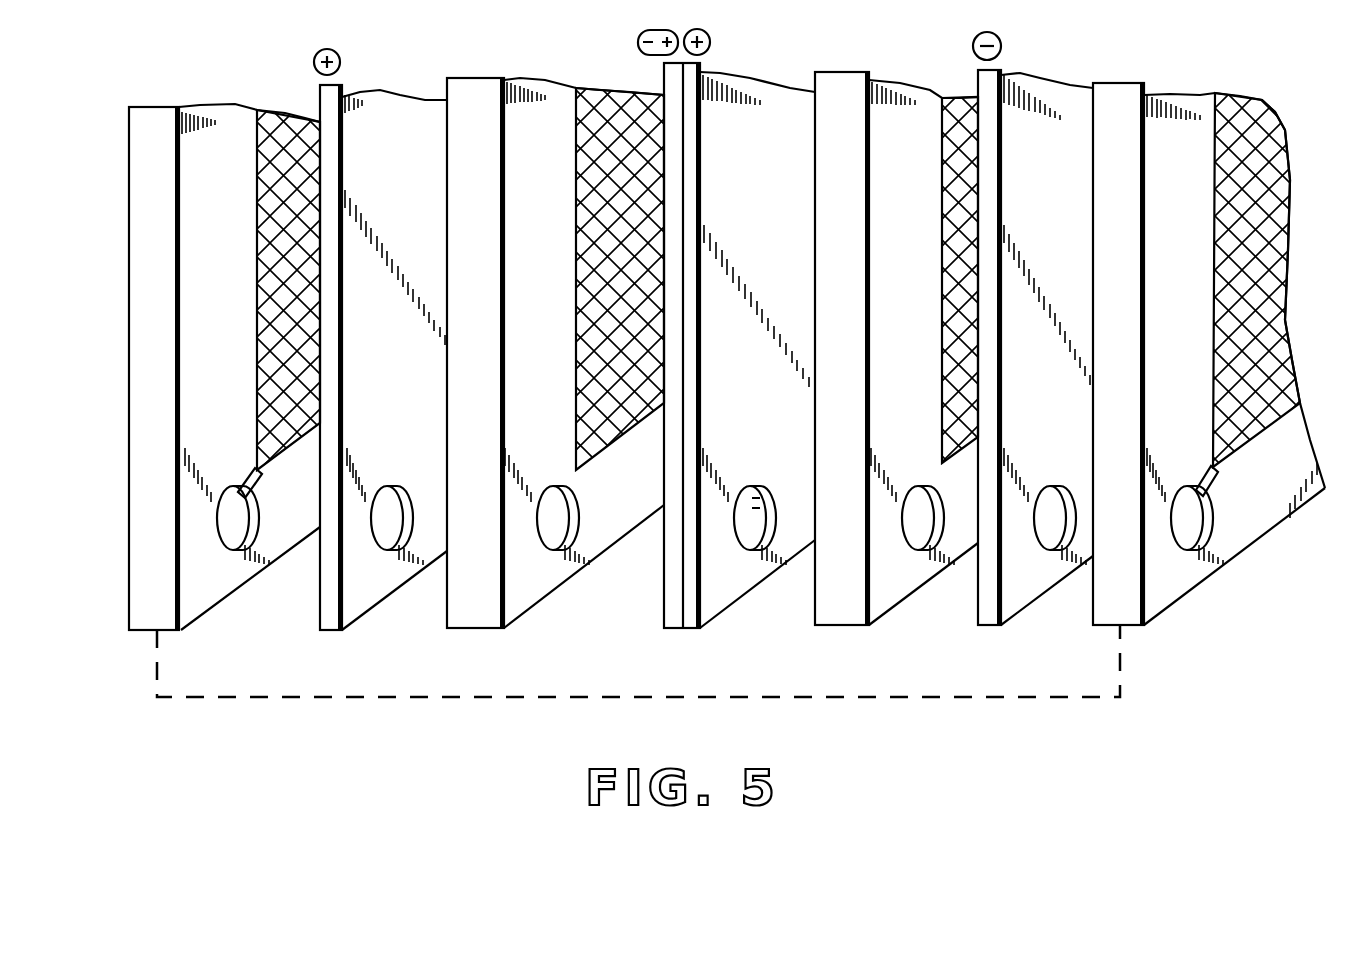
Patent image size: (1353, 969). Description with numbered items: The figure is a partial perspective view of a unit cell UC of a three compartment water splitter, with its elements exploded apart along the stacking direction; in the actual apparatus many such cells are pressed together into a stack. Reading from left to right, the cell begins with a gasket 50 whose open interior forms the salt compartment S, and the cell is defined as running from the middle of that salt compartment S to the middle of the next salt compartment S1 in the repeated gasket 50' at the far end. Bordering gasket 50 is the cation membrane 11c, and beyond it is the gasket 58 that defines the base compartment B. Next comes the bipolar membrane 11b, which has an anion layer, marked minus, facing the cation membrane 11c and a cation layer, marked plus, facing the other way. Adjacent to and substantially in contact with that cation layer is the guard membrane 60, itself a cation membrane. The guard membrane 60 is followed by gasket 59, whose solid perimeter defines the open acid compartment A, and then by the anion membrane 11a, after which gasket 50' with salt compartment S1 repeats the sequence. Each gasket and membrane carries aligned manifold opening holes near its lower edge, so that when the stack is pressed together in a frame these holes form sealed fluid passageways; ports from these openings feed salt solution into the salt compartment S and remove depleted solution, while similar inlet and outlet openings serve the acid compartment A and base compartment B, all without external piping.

The gasket 50 is at (184, 377).
The gasket 50' is at (1209, 375).
The gasket 58 is at (488, 592).
The gasket 59 is at (853, 595).
The guard membrane 60 is at (700, 76).
The anion membrane 11a is at (990, 95).
The bipolar membrane 11b is at (662, 70).
The cation membrane 11c is at (333, 123).
The salt compartment S is at (270, 112).
The salt compartment S1 is at (1262, 128).
The acid compartment A is at (960, 95).
The base compartment B is at (612, 90).
The unit cell UC is at (985, 700).